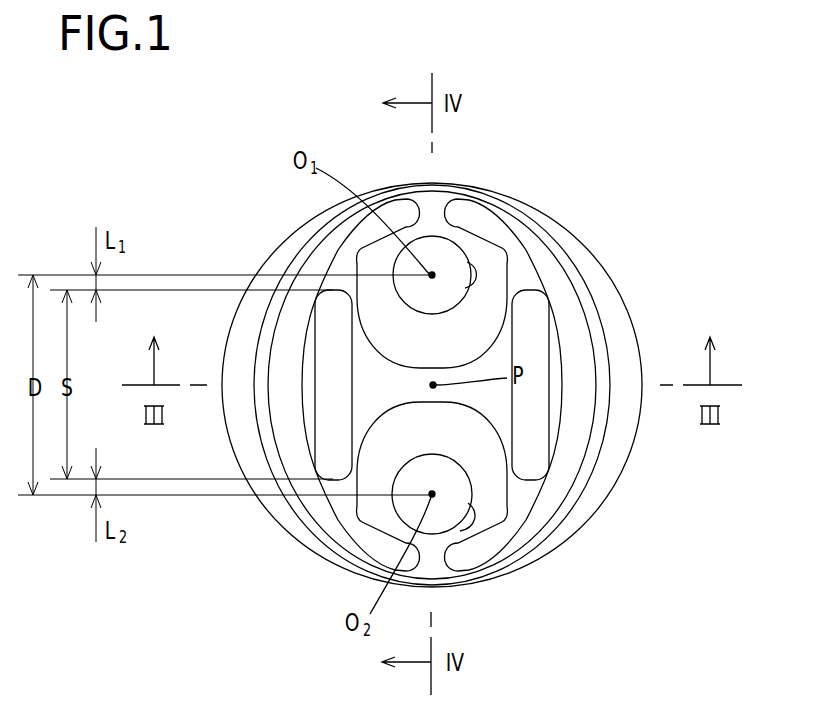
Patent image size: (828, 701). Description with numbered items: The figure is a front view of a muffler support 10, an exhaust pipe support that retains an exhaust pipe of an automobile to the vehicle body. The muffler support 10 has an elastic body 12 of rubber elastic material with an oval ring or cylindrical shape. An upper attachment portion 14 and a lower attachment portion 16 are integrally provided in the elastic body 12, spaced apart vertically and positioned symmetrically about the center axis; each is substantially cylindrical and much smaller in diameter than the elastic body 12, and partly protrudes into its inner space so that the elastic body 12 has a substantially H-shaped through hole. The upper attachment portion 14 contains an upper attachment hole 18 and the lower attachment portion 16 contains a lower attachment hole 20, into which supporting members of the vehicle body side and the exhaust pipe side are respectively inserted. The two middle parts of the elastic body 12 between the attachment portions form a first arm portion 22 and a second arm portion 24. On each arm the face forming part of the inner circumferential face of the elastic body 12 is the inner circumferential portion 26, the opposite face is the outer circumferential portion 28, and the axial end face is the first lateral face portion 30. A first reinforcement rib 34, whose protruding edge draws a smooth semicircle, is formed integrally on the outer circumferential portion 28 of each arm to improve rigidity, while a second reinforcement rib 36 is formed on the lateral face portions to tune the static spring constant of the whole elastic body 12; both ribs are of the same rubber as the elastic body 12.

The muffler support 10 is at (438, 373).
The elastic body 12 is at (386, 168).
The upper attachment portion 14 is at (440, 189).
The lower attachment portion 16 is at (440, 582).
The upper attachment hole 18 is at (466, 277).
The lower attachment hole 20 is at (461, 522).
The first arm portion 22 is at (438, 395).
The second arm portion 24 is at (438, 395).
The inner circumferential portion 26 is at (323, 318).
The outer circumferential portion 28 is at (256, 402).
The first lateral face portion 30 is at (588, 292).
The first reinforcement rib 34 is at (438, 395).
The second reinforcement rib 36 is at (347, 532).